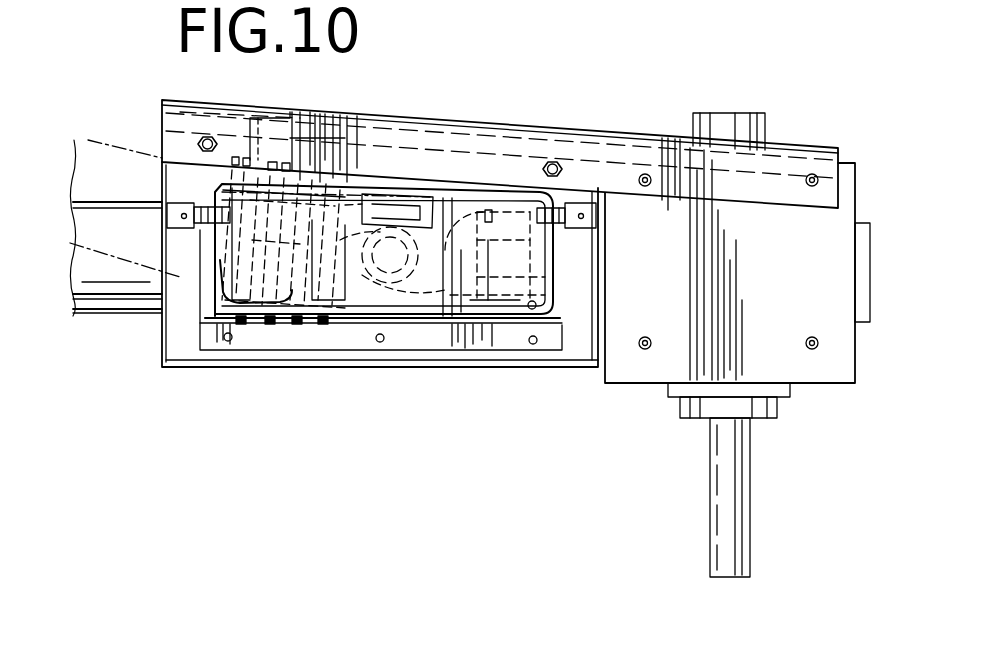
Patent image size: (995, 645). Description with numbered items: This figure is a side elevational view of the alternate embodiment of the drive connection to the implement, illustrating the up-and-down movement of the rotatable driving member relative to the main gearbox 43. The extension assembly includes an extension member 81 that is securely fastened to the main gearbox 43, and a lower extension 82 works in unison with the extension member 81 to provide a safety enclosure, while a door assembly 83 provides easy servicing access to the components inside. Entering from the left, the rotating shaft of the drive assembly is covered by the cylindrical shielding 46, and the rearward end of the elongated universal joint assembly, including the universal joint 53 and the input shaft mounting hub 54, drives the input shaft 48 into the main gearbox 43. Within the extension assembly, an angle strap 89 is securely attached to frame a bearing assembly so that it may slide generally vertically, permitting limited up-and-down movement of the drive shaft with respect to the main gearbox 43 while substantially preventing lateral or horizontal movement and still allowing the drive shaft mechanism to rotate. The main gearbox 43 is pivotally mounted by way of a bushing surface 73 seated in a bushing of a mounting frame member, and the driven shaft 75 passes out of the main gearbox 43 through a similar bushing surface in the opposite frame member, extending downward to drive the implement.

The main gearbox 43 is at (832, 332).
The cylindrical shielding 46 is at (120, 300).
The input shaft 48 is at (575, 263).
The universal joint 53 is at (415, 208).
The input shaft mounting hub 54 is at (513, 303).
The bushing surface 73 is at (763, 123).
The driven shaft 75 is at (715, 498).
The extension member 81 is at (584, 138).
The lower extension 82 is at (583, 350).
The door assembly 83 is at (260, 343).
The angle strap 89 is at (293, 130).